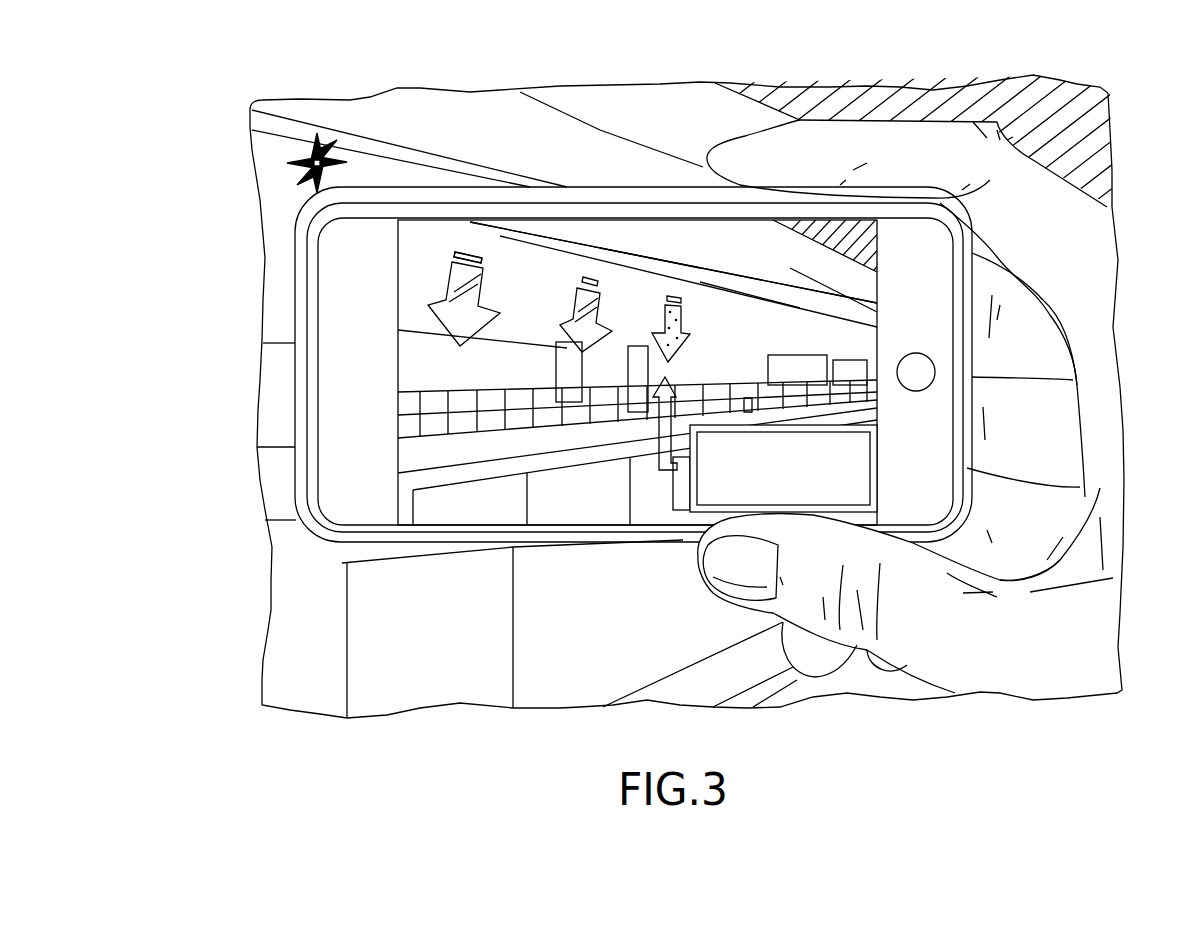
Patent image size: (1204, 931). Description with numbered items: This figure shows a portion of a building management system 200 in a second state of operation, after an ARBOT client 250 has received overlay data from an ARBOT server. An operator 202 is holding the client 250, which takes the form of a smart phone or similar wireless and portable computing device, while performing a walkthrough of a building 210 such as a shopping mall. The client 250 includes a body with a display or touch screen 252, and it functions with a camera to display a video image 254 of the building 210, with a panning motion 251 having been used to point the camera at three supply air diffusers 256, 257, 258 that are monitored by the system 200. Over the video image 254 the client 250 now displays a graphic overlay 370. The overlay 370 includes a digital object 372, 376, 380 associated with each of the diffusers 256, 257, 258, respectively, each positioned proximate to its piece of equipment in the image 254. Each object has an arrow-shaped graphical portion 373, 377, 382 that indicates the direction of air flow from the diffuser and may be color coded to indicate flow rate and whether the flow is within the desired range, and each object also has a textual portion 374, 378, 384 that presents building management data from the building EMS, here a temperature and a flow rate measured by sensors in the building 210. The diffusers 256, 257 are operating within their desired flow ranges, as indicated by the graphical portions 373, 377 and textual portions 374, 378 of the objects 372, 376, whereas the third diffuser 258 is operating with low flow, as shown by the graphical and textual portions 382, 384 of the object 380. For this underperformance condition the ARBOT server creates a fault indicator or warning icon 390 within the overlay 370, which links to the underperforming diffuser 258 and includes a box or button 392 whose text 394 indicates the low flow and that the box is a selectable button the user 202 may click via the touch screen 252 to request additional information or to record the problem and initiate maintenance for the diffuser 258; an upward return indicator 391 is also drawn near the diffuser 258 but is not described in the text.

The building management system 200 is at (232, 82).
The operator 202 is at (1078, 608).
The building 210 is at (248, 194).
The ARBOT client 250 is at (290, 545).
The panning 251 is at (333, 168).
The display or touch screen 252 is at (360, 515).
The video image 254 is at (673, 262).
The supply air diffuser 256 is at (466, 250).
The supply air diffuser 257 is at (588, 275).
The supply air diffuser 258 is at (672, 296).
The overlay 370 is at (808, 266).
The digital object 372 is at (432, 252).
The graphical portion 373 is at (440, 290).
The textual portion 374 is at (546, 272).
The digital object 376 is at (620, 243).
The graphical portion 377 is at (566, 343).
The textual portion 378 is at (657, 277).
The digital object 380 is at (709, 258).
The graphical portion 382 is at (648, 348).
The textual portion 384 is at (755, 318).
The fault indicator or warning icon 390 is at (625, 465).
The return airflow indicator 391 is at (673, 410).
The box or button 392 is at (747, 395).
The text 394 is at (805, 432).